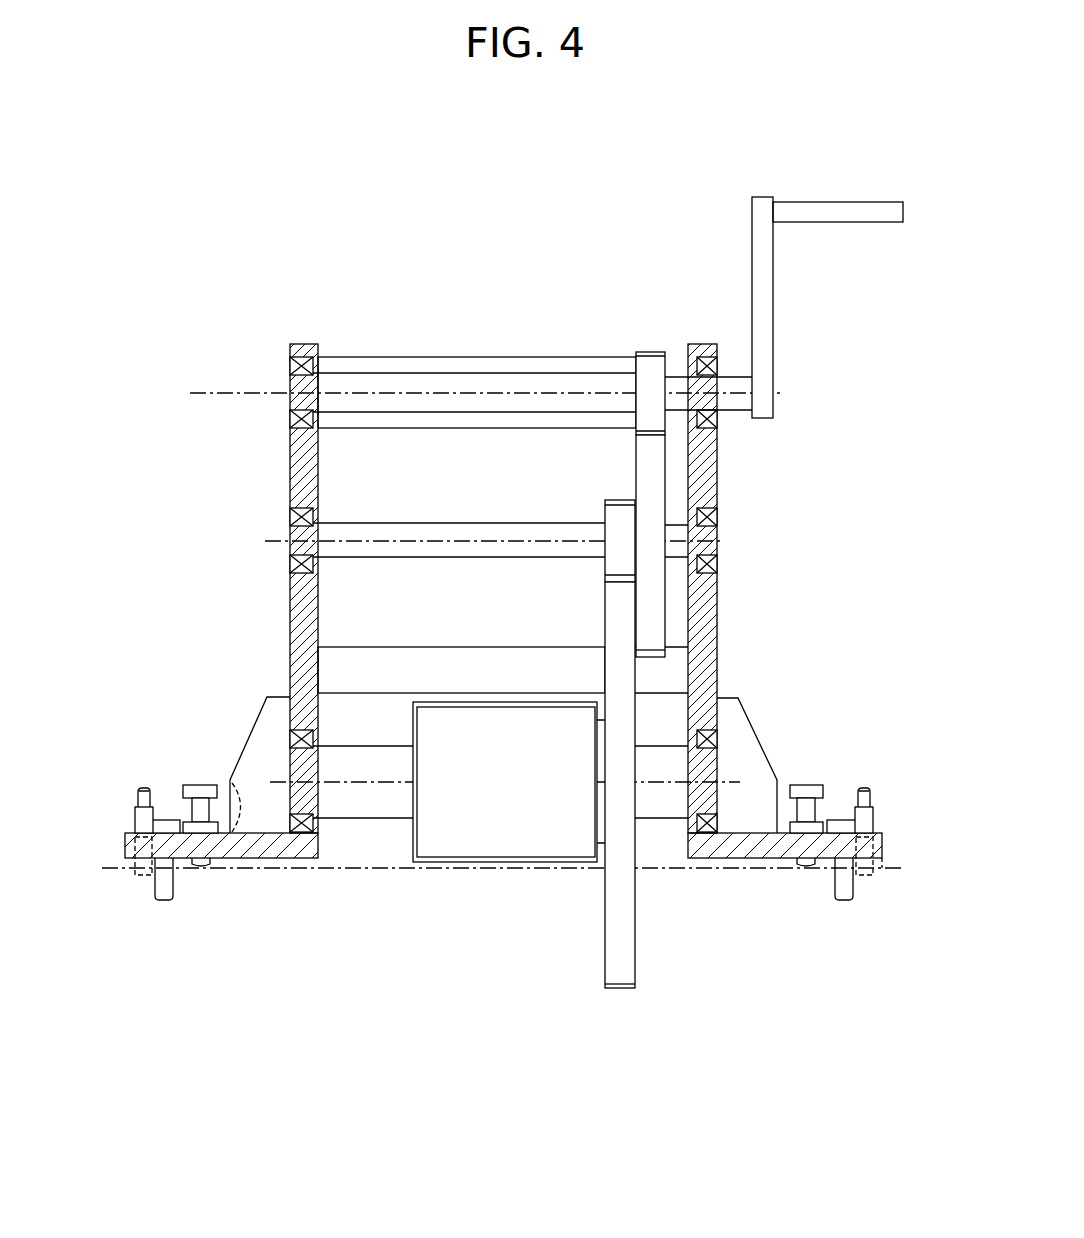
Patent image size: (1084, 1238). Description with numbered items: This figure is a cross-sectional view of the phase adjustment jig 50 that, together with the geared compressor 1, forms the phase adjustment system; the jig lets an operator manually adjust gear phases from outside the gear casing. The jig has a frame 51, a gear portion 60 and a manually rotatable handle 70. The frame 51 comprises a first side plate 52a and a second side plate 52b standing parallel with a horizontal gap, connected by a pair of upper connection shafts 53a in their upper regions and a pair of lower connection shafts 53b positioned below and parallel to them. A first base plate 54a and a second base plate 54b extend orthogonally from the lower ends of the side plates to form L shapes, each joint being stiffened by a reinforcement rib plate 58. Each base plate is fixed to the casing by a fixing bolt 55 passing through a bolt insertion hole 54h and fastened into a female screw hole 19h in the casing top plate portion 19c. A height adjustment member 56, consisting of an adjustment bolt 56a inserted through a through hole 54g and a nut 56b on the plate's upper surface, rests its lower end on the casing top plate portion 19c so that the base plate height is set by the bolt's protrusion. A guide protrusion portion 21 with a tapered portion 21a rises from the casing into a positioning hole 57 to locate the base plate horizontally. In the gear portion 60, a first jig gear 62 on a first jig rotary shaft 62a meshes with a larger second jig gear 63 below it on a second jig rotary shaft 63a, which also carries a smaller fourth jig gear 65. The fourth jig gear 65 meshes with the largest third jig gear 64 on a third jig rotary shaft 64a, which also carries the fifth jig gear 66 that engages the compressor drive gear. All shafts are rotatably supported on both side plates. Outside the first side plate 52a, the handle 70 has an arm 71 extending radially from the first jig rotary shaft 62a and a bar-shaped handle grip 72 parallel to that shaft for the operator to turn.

The geared compressor 1 is at (107, 853).
The casing top plate portion 19c is at (880, 810).
The female screw hole 19h is at (160, 900).
The guide protrusion portion 21 is at (135, 795).
The tapered portion 21a is at (143, 790).
The phase adjustment jig 50 is at (290, 326).
The frame 51 is at (718, 583).
The first side plate 52a is at (718, 625).
The second side plate 52b is at (290, 622).
The upper connection shaft 53a is at (455, 357).
The lower connection shaft 53b is at (470, 647).
The first base plate 54a is at (720, 858).
The second base plate 54b is at (260, 858).
The through hole 54g is at (205, 862).
The bolt insertion hole 54h is at (857, 870).
The fixing bolt 55 is at (145, 802).
The height adjustment member 56 is at (172, 818).
The adjustment bolt 56a is at (200, 785).
The nut 56b is at (233, 830).
The positioning hole 57 is at (140, 875).
The reinforcement rib plate 58 is at (262, 705).
The gear portion 60 is at (636, 334).
The first jig gear 62 is at (648, 352).
The first jig rotary shaft 62a is at (362, 357).
The second jig gear 63 is at (660, 473).
The second jig rotary shaft 63a is at (365, 523).
The third jig gear 64 is at (635, 968).
The third jig rotary shaft 64a is at (353, 746).
The fourth jig gear 65 is at (612, 500).
The fifth jig gear 66 is at (528, 702).
The manually rotatable handle 70 is at (793, 197).
The arm 71 is at (773, 318).
The handle grip 72 is at (860, 202).